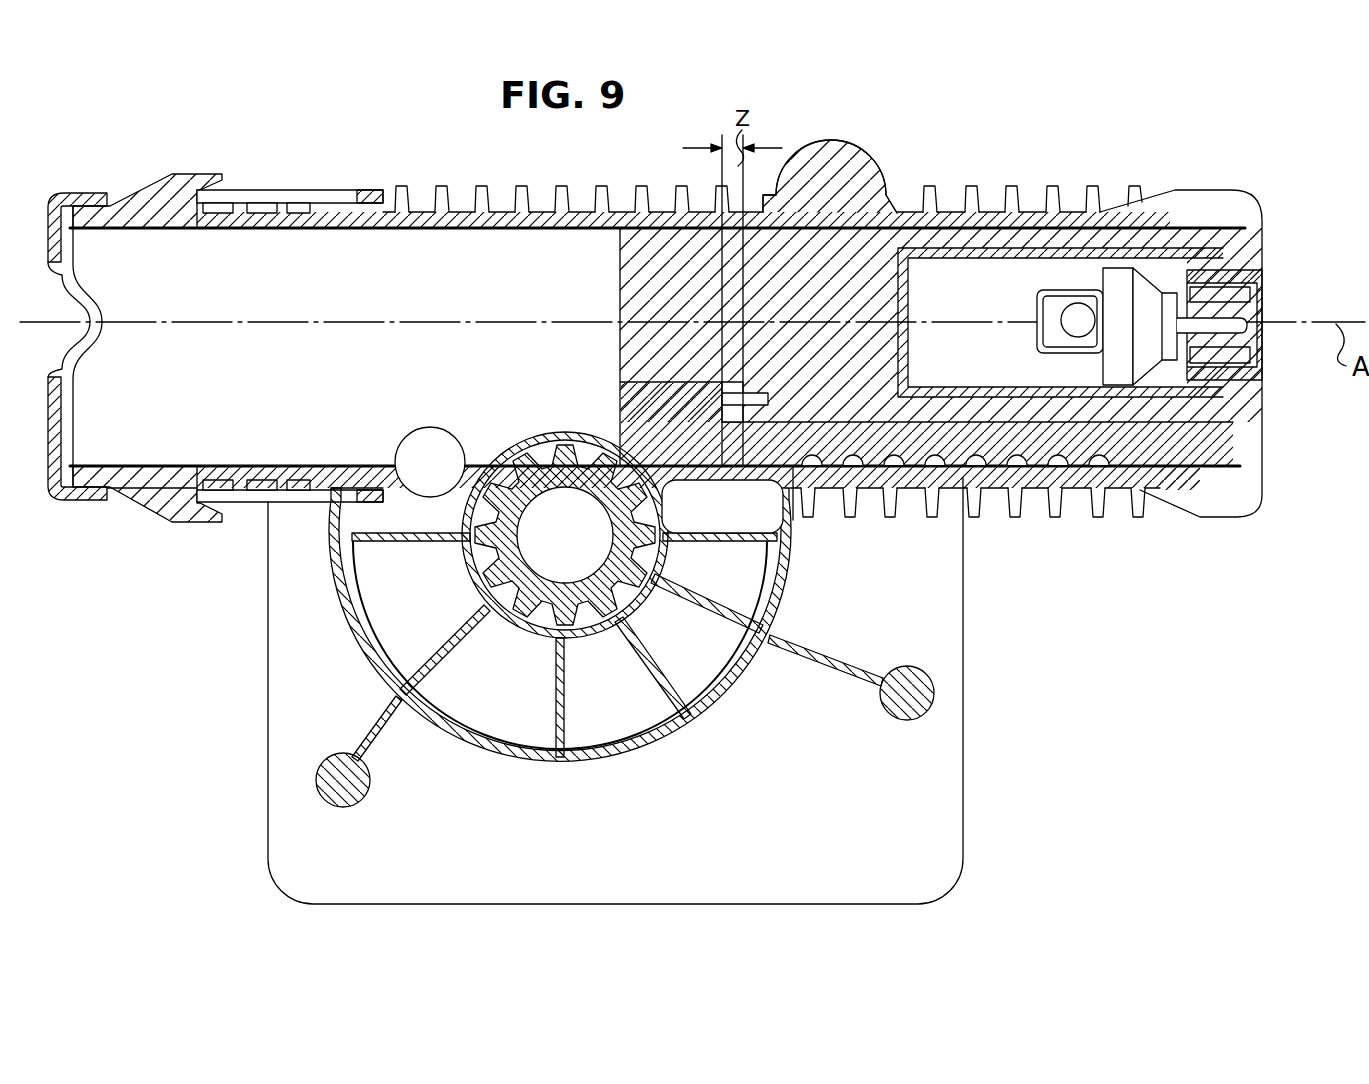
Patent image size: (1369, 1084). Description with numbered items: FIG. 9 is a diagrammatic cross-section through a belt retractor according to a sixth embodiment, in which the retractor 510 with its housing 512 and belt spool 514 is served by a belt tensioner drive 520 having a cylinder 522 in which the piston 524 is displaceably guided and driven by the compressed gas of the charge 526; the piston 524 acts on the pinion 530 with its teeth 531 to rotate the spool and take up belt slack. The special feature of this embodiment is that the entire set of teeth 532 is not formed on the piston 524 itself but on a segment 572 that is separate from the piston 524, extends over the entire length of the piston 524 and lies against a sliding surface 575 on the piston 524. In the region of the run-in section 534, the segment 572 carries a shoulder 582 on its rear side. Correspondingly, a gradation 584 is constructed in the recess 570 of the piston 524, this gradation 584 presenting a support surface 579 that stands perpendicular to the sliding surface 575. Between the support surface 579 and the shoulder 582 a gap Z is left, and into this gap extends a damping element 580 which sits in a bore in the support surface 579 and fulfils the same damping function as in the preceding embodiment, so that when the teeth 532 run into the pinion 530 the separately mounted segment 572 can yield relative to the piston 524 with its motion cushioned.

The housing frame 510 is at (968, 843).
The lock ring 512 is at (290, 346).
The outer rim of sector gear 514 is at (650, 677).
The sector gear body 520 is at (625, 599).
The tube outer wall 522 is at (335, 218).
The piston 524 is at (880, 253).
The cavity liner 526 is at (1020, 272).
The sprocket 530 is at (547, 595).
The guide pin 531 is at (507, 460).
The teeth 532 is at (1083, 458).
The run-in section 534 is at (620, 437).
The recess 570 is at (957, 422).
The segment 572 is at (1150, 435).
The sliding surface 575 is at (866, 440).
The support surface 579 is at (723, 383).
The damping element 580 is at (808, 440).
The shoulder 582 is at (620, 397).
The gradation 584 is at (750, 474).